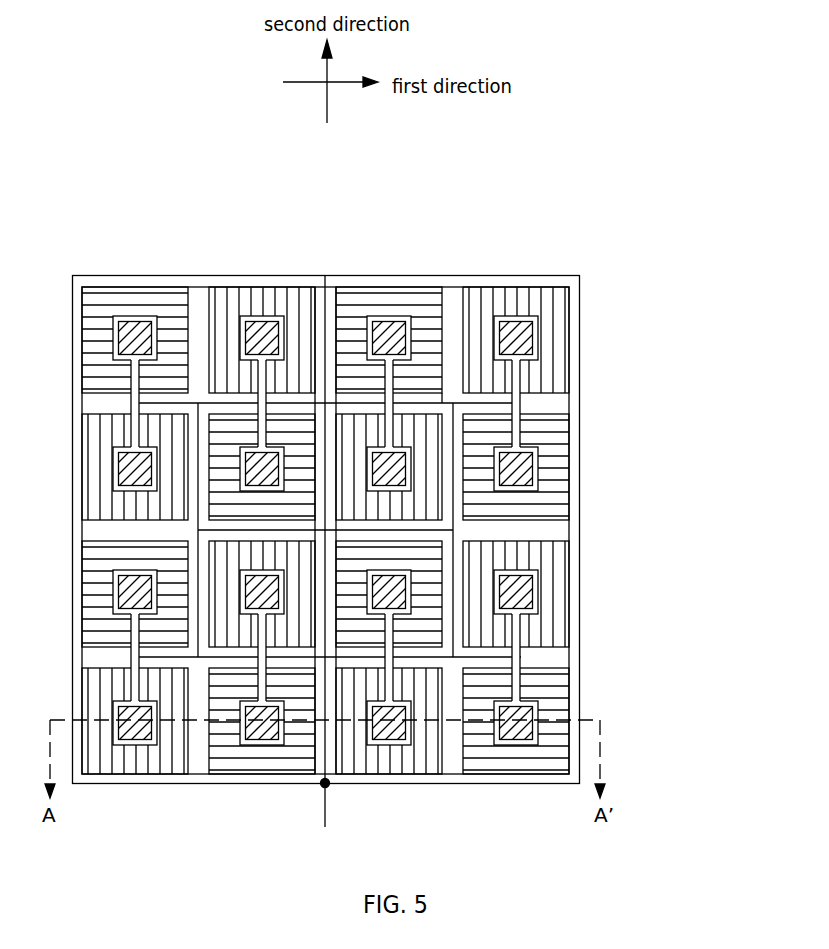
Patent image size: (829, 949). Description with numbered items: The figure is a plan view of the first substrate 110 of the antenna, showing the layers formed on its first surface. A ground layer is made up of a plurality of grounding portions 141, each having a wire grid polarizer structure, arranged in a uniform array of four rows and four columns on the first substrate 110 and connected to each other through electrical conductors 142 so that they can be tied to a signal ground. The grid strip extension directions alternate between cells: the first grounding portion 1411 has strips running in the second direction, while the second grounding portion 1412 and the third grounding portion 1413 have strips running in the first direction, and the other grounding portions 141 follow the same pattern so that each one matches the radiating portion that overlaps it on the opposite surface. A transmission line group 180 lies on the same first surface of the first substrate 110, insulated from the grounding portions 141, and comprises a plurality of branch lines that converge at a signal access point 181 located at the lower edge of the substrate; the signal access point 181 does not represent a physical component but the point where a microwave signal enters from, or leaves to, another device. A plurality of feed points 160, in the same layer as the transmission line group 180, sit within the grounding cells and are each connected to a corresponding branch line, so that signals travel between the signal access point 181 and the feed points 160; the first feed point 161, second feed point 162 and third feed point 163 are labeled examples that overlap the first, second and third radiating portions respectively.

The first substrate 110 is at (579, 627).
The grounding portions 141 is at (411, 530).
The first grounding portion 1411 is at (572, 340).
The second grounding portion 1412 is at (442, 302).
The third grounding portion 1413 is at (568, 430).
The electrical conductors 142 is at (569, 530).
The feed points 160 is at (461, 328).
The first feed point 161 is at (505, 315).
The second feed point 162 is at (388, 313).
The third feed point 163 is at (526, 467).
The transmission line group 180 is at (521, 657).
The signal access point 181 is at (328, 565).